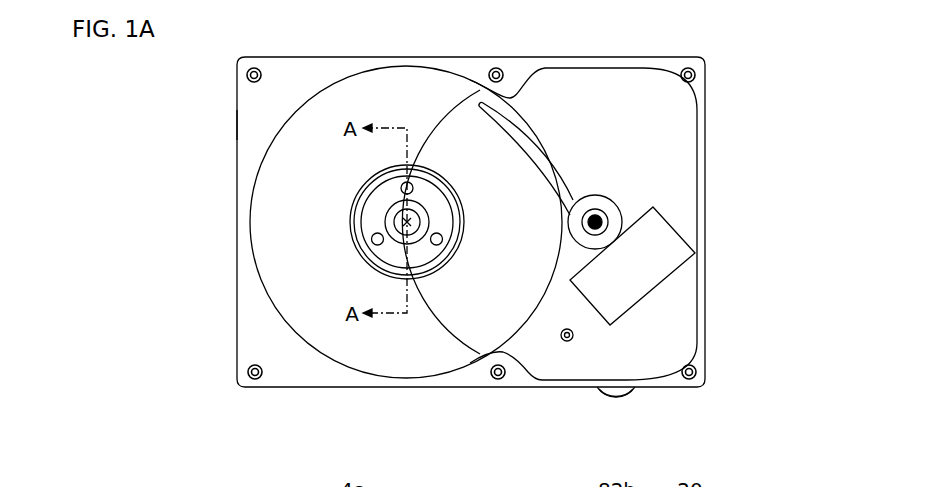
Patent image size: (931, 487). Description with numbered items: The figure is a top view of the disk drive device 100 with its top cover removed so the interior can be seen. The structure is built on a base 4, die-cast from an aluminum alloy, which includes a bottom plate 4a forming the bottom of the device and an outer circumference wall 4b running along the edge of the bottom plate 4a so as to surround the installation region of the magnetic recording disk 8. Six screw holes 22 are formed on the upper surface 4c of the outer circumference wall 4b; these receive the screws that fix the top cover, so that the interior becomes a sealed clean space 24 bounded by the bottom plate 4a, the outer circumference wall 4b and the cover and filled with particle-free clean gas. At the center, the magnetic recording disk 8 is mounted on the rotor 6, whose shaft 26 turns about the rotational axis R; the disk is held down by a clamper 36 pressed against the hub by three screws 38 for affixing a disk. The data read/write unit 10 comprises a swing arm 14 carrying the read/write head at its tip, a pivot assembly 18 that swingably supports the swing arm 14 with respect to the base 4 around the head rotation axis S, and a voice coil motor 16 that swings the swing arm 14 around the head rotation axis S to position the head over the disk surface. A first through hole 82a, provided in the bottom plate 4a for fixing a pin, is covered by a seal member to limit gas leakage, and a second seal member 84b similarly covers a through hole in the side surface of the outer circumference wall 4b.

The disk drive device 100 is at (326, 453).
The base 4 is at (707, 127).
The bottom plate 4a is at (556, 100).
The outer circumference wall 4b is at (300, 81).
The upper surface 4c is at (245, 125).
The rotor 6 is at (387, 221).
The magnetic recording disk 8 is at (403, 107).
The data read/write unit 10 is at (648, 214).
The swing arm 14 is at (558, 173).
The voice coil motor 16 is at (665, 248).
The pivot assembly 18 is at (612, 213).
The screw holes 22 is at (255, 67).
The clean space 24 is at (651, 97).
The shaft 26 is at (423, 212).
The clamper 36 is at (392, 258).
The screws for affixing a disk 38 is at (397, 182).
The first through hole 82a is at (567, 342).
The second seal member 84b is at (612, 397).
The rotational axis R is at (408, 228).
The head rotation axis S is at (595, 250).